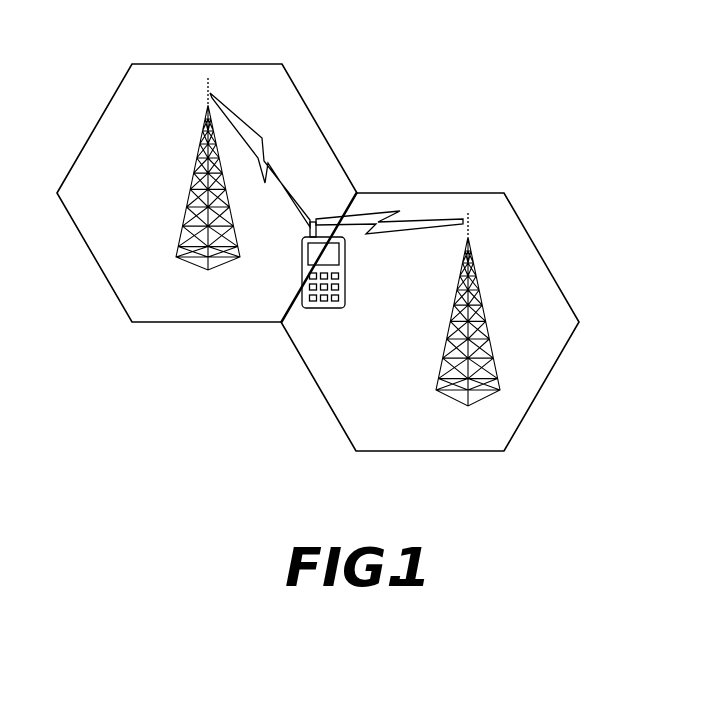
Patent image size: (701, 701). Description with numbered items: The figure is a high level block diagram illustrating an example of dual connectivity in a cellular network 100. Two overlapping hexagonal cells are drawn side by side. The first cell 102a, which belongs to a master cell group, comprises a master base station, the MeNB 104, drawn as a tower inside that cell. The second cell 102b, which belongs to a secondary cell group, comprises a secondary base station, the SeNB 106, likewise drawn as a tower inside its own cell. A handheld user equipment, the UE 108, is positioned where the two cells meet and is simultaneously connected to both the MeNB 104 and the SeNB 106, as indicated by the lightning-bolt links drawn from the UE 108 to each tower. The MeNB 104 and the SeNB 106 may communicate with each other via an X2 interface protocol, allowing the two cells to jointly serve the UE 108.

The cellular network 100 is at (510, 45).
The cell 102a is at (97, 261).
The cell 102b is at (543, 385).
The MeNB 104 is at (192, 178).
The SeNB 106 is at (450, 320).
The UE 108 is at (333, 309).